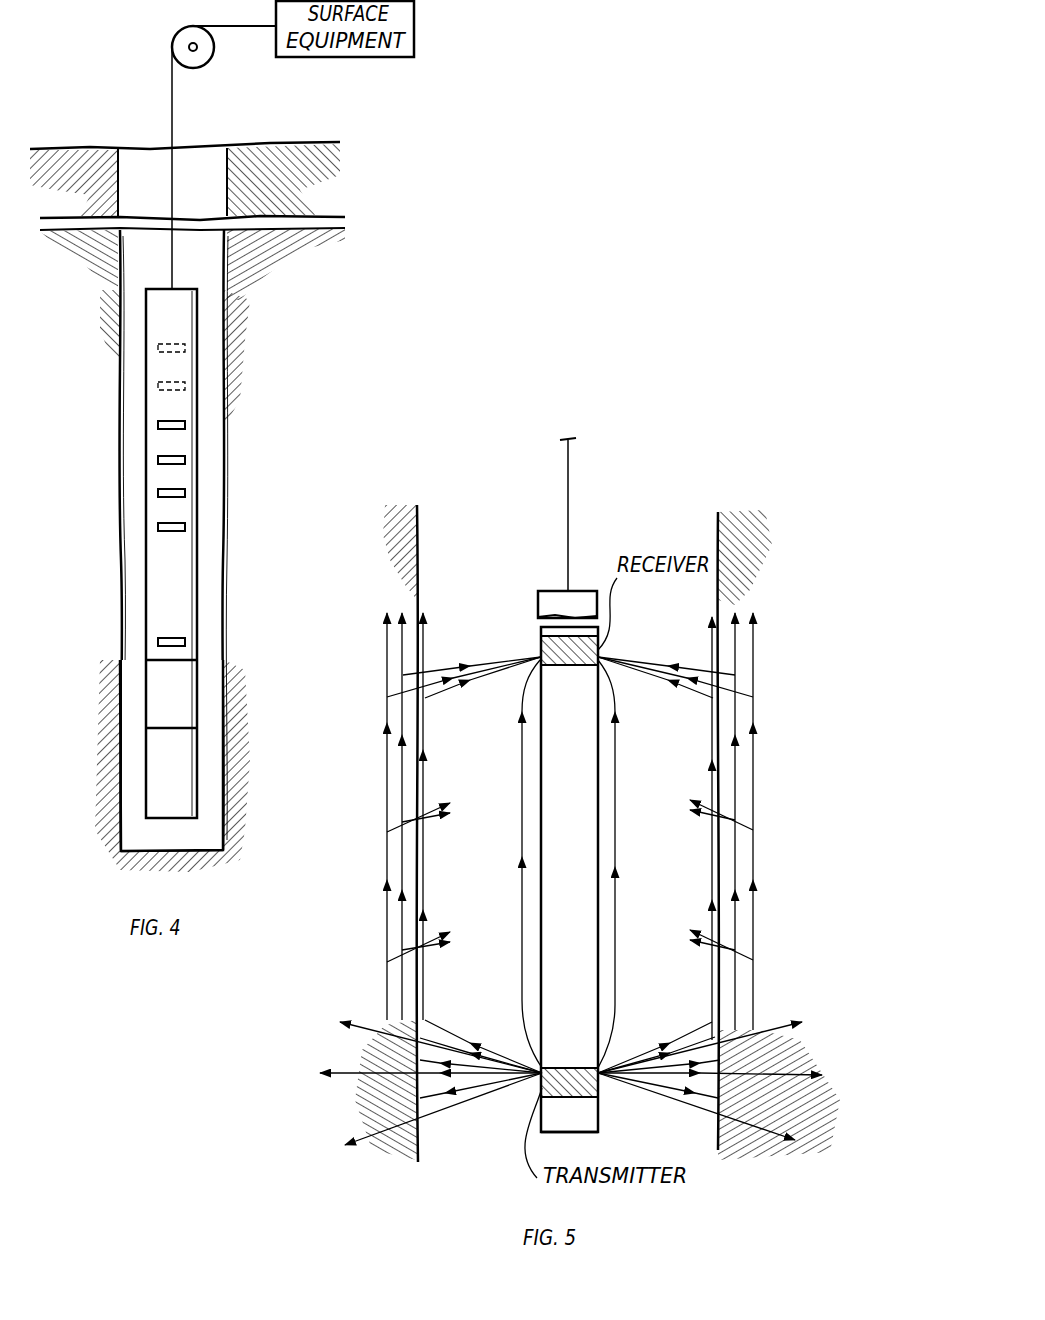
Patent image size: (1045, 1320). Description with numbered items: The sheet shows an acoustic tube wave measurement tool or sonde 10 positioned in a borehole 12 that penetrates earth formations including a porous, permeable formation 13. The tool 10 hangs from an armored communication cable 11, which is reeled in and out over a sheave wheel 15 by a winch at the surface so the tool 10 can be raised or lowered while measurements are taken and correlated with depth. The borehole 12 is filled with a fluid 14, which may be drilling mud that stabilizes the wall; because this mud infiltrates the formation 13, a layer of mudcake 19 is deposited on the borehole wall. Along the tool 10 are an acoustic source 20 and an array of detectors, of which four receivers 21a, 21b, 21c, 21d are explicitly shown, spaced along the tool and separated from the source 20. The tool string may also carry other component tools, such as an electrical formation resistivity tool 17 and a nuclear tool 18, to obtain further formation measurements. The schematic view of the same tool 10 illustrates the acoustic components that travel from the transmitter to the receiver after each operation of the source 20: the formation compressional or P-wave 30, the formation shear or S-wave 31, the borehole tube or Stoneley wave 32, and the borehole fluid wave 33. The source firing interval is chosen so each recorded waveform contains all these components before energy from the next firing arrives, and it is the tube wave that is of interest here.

In FIG. 4, the acoustic tube wave measurement tool 10 is at (140, 536).
In FIG. 5, the acoustic tube wave measurement tool 10 is at (552, 764).
In FIG. 4, the armored communication cable 11 is at (172, 108).
In FIG. 4, the borehole 12 is at (118, 445).
In FIG. 4, the formation 13 is at (162, 551).
In FIG. 5, the formation 13 is at (620, 828).
In FIG. 4, the fluid 14 is at (140, 258).
In FIG. 4, the sheave wheel 15 is at (206, 60).
In FIG. 4, the electrical formation resistivity tool 17 is at (171, 686).
In FIG. 4, the nuclear tool 18 is at (171, 758).
In FIG. 4, the mudcake 19 is at (212, 306).
In FIG. 4, the acoustic source 20 is at (186, 642).
In FIG. 4, the acoustic detector 21a is at (186, 528).
In FIG. 4, the acoustic detector 21b is at (186, 494).
In FIG. 4, the acoustic detector 21c is at (186, 460).
In FIG. 4, the acoustic detector 21d is at (186, 424).
In FIG. 5, the compressional wave 30 is at (738, 978).
In FIG. 5, the shear wave 31 is at (388, 970).
In FIG. 5, the Stoneley wave 32 is at (713, 862).
In FIG. 5, the borehole fluid wave 33 is at (520, 886).